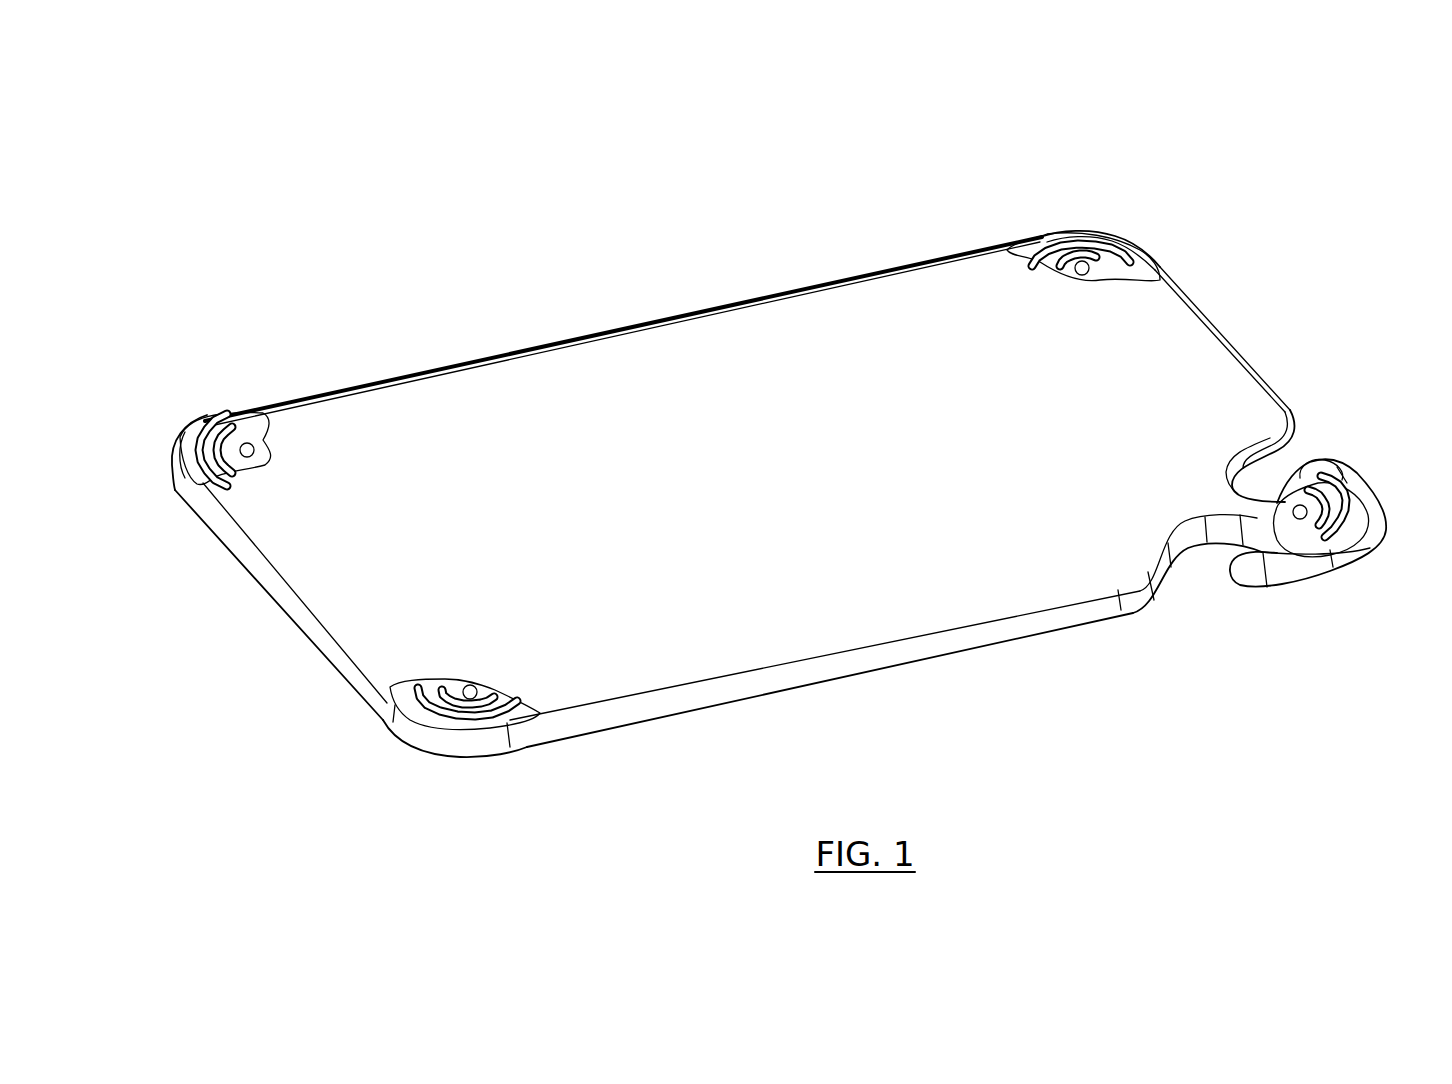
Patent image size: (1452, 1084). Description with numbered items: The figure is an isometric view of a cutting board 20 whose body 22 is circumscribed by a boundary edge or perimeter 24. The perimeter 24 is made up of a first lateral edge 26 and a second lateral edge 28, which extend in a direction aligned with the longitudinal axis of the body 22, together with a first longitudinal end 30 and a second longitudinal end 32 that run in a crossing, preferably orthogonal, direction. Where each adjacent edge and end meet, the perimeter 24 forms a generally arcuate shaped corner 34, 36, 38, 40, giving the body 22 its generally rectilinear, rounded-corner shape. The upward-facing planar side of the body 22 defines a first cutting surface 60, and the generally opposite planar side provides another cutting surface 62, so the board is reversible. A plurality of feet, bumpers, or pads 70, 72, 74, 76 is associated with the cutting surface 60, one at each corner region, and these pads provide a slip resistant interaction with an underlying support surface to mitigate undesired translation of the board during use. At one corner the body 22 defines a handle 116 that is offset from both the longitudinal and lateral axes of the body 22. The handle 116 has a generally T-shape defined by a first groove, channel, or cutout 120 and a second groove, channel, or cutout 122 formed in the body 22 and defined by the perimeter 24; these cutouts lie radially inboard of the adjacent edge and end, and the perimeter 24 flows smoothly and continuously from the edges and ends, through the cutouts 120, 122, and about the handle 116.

The cutting board 20 is at (1280, 183).
The body 22 is at (905, 300).
The perimeter 24 is at (797, 688).
The first lateral edge 26 is at (930, 660).
The second lateral edge 28 is at (637, 325).
The first longitudinal end 30 is at (1243, 350).
The second longitudinal end 32 is at (243, 577).
The corner 34 is at (1373, 556).
The corner 36 is at (1122, 243).
The corner 38 is at (185, 432).
The corner 40 is at (423, 745).
The first cutting surface 60 is at (783, 523).
The cutting surface 62 is at (728, 728).
The pad 70 is at (1277, 510).
The pad 72 is at (1065, 280).
The pad 74 is at (270, 450).
The pad 76 is at (478, 685).
The handle 116 is at (1350, 368).
The first cutout 120 is at (1205, 560).
The second cutout 122 is at (1290, 465).